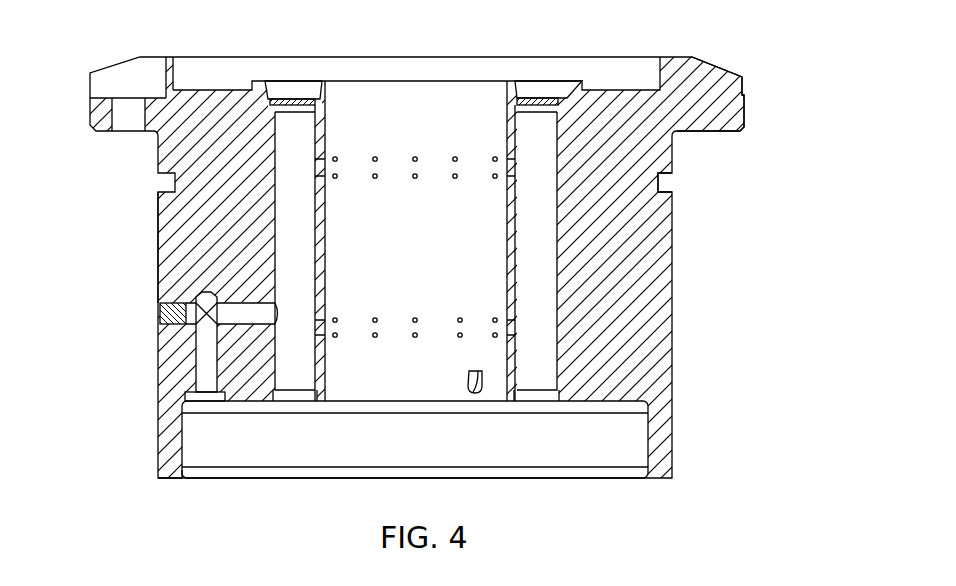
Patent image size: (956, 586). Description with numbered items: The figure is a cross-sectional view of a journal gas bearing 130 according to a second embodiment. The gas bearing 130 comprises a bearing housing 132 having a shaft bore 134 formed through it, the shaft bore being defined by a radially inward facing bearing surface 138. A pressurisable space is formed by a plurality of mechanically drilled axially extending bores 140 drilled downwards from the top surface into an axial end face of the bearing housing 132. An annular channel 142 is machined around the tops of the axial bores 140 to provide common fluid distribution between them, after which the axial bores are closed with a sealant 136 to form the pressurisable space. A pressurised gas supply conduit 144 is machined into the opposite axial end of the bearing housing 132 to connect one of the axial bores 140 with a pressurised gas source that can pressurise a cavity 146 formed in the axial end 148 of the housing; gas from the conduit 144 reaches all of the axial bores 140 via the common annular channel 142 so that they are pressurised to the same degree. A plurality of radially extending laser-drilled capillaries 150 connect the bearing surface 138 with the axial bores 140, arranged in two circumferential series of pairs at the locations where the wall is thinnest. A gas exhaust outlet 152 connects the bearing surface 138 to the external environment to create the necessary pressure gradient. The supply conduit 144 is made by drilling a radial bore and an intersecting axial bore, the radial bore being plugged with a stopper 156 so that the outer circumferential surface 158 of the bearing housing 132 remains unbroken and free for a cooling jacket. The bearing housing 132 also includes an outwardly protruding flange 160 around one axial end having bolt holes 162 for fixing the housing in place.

The gas bearing 130 is at (715, 218).
The bearing housing 132 is at (739, 108).
The shaft bore 134 is at (453, 97).
The sealant 136 is at (293, 98).
The bearing surface 138 is at (326, 120).
The axial bores 140 is at (284, 118).
The annular channel 142 is at (508, 118).
The pressurised gas supply conduit 144 is at (245, 317).
The cavity 146 is at (255, 445).
The axial end 148 is at (170, 478).
The laser-drilled capillaries 150 is at (316, 315).
The gas exhaust outlet 152 is at (470, 368).
The stopper 156 is at (176, 328).
The outer circumferential surface 158 is at (160, 233).
The flange 160 is at (694, 133).
The bolt holes 162 is at (128, 122).